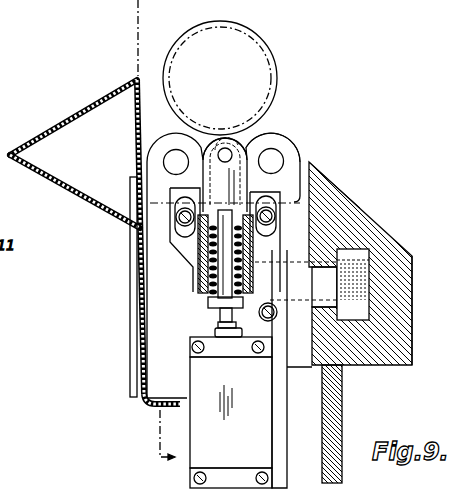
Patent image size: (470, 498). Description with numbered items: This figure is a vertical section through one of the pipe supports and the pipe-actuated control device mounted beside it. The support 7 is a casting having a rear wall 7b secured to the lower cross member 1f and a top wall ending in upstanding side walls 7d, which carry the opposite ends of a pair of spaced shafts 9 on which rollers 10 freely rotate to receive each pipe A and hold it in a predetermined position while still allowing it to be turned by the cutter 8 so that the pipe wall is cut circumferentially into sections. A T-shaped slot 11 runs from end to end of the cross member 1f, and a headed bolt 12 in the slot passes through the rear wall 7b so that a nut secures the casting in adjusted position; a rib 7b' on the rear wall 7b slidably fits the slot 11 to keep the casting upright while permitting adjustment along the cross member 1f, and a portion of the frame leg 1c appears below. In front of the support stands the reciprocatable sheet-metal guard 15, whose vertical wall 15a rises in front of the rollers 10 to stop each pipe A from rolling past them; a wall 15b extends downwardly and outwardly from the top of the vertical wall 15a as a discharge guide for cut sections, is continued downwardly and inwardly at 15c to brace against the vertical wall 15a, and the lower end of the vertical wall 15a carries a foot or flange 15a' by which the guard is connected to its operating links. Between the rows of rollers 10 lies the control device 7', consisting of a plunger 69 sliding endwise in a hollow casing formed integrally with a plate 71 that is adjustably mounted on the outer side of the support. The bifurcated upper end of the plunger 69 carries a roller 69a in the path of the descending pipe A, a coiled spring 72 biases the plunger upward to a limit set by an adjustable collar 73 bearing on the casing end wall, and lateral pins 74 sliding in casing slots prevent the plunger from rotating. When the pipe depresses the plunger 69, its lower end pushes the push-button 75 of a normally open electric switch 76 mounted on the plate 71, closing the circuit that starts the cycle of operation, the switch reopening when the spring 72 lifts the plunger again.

The guard 15 is at (95, 249).
The vertical wall 15a is at (122, 237).
The wall 15b is at (88, 105).
The extension of wall 15c is at (80, 198).
The foot or flange 15a' is at (146, 412).
The cutter 8 is at (142, 239).
The pipe A is at (226, 32).
The rollers 10 is at (168, 136).
The shafts 9 is at (183, 148).
The support 7 is at (282, 146).
The side walls 7d is at (280, 130).
The device 7' is at (224, 135).
The plunger 69 is at (270, 191).
The roller 69a is at (243, 137).
The pins 74 is at (277, 211).
The coiled spring 72 is at (208, 260).
The collar 73 is at (212, 304).
The push-button 75 is at (215, 332).
The electric switch 76 is at (190, 380).
The plate 71 is at (272, 393).
The T-shaped slot 11 is at (347, 249).
The rear wall 7b is at (334, 179).
The rib 7b' is at (311, 275).
The headed bolt 12 is at (350, 322).
The lower cross member 1f is at (412, 323).
The leg 1c is at (342, 408).